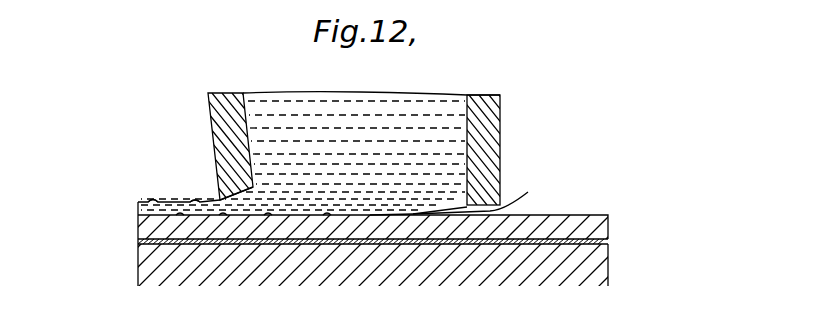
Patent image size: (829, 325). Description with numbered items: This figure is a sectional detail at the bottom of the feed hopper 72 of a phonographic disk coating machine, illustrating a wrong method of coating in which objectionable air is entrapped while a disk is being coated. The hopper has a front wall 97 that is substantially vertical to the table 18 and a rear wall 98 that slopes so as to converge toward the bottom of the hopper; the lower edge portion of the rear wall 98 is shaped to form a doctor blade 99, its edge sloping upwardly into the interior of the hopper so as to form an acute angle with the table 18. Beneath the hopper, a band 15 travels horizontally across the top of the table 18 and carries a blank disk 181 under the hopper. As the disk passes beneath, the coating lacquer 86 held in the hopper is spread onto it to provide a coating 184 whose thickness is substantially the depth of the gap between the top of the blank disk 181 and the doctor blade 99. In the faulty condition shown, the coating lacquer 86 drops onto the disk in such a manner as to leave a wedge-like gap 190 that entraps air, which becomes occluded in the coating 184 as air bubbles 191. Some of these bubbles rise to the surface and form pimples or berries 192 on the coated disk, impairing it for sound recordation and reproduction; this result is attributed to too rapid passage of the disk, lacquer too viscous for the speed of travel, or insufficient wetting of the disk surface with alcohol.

The feed hopper 72 is at (490, 92).
The coating lacquer 86 is at (435, 138).
The front wall 97 is at (500, 152).
The rear wall 98 is at (214, 110).
The doctor blade 99 is at (221, 199).
The pimples or berries 192 is at (195, 199).
The coating 184 is at (138, 201).
The wedge-like gap 190 is at (466, 194).
The blank disk 181 is at (582, 218).
The band 15 is at (608, 243).
The table 18 is at (138, 263).
The air bubbles 191 is at (326, 215).